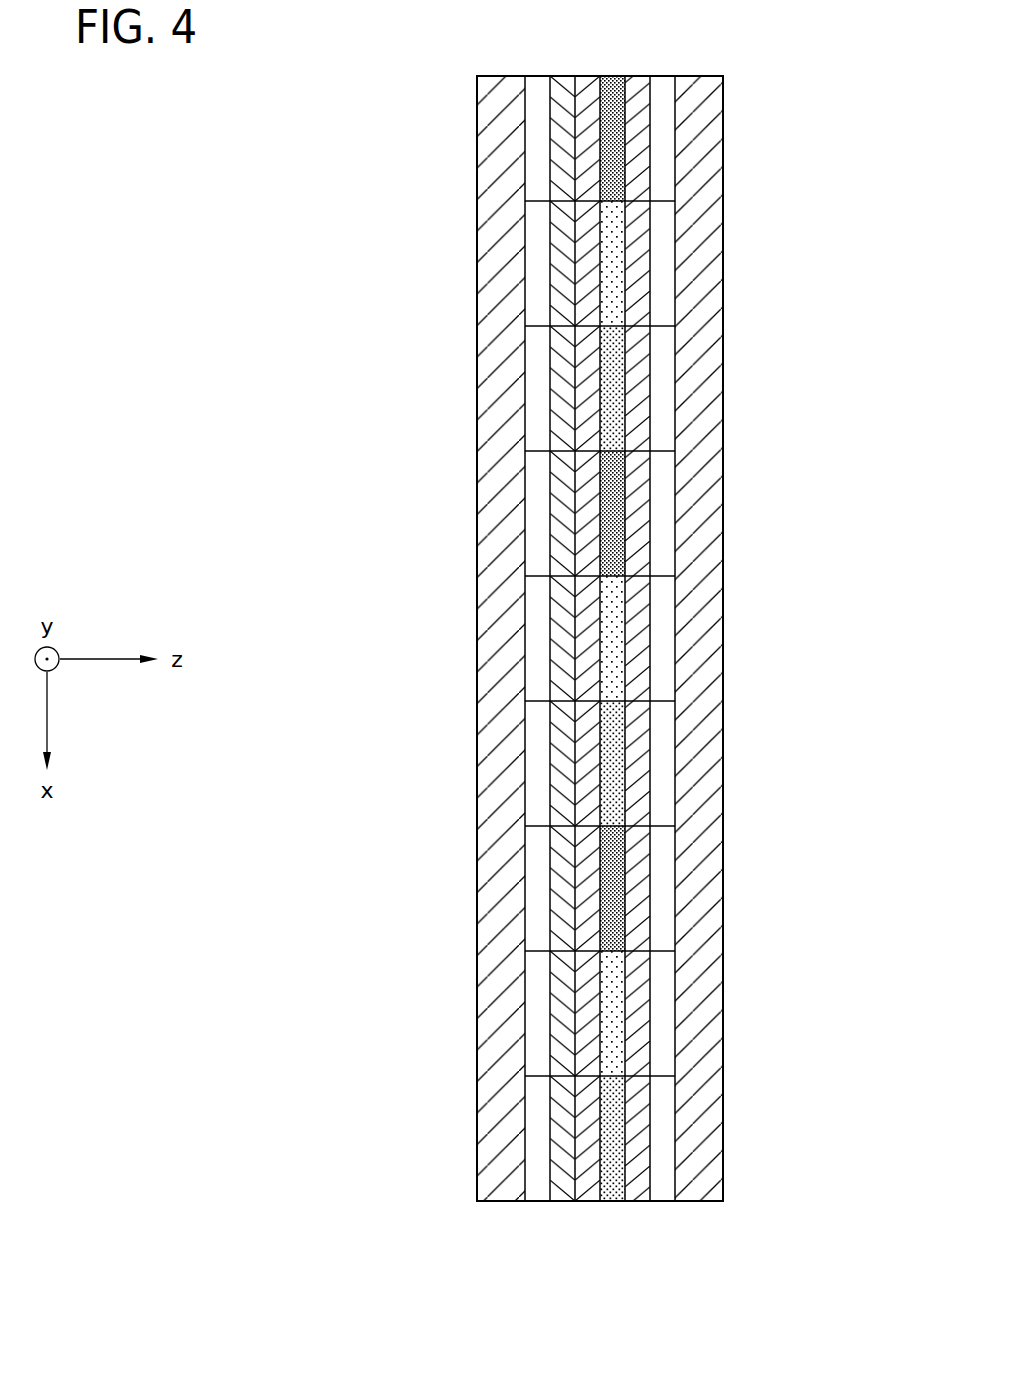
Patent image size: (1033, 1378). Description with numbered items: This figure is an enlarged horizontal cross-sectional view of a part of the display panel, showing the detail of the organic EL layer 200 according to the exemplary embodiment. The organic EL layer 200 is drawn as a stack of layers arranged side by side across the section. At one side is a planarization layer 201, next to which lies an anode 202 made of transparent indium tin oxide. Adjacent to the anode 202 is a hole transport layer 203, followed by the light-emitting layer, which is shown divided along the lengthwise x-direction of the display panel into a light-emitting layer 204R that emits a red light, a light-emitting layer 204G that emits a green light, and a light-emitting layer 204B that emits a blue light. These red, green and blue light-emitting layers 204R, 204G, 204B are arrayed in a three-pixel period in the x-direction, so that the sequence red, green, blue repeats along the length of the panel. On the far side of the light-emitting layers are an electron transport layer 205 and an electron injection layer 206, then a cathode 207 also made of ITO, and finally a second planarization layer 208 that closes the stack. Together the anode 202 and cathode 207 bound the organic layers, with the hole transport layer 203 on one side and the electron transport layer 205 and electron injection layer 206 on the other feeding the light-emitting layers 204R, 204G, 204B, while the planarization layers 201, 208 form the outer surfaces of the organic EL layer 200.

The organic EL layer 200 is at (673, 50).
The planarization layer 201 is at (697, 1190).
The anode 202 is at (667, 1192).
The hole transport layer 203 is at (636, 1190).
The light-emitting layer 204R is at (598, 134).
The light-emitting layer 204G is at (604, 272).
The light-emitting layer 204B is at (604, 397).
The electron transport layer 205 is at (578, 1192).
The electron injection layer 206 is at (571, 1190).
The cathode 207 is at (540, 1190).
The planarization layer 208 is at (500, 1192).